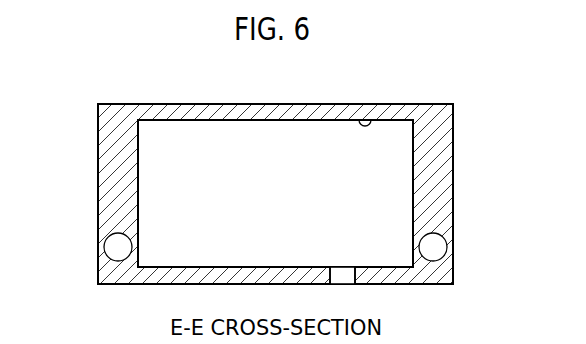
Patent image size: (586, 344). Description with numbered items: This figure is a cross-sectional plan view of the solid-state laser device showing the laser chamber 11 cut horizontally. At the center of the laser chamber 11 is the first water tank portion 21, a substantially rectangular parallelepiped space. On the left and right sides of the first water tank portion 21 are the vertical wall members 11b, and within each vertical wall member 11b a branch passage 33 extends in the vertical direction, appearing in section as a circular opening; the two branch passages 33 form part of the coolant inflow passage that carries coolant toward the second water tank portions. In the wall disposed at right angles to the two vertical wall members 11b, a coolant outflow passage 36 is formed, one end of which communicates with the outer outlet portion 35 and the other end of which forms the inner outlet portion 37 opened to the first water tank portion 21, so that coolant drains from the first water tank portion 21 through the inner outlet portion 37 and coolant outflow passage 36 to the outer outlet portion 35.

The laser chamber 11 is at (210, 106).
The first water tank portion 21 is at (364, 120).
The vertical wall member 11b is at (115, 175).
The branch passage 33 is at (130, 245).
The outer outlet portion 35 is at (348, 284).
The coolant outflow passage 36 is at (350, 268).
The inner outlet portion 37 is at (333, 268).